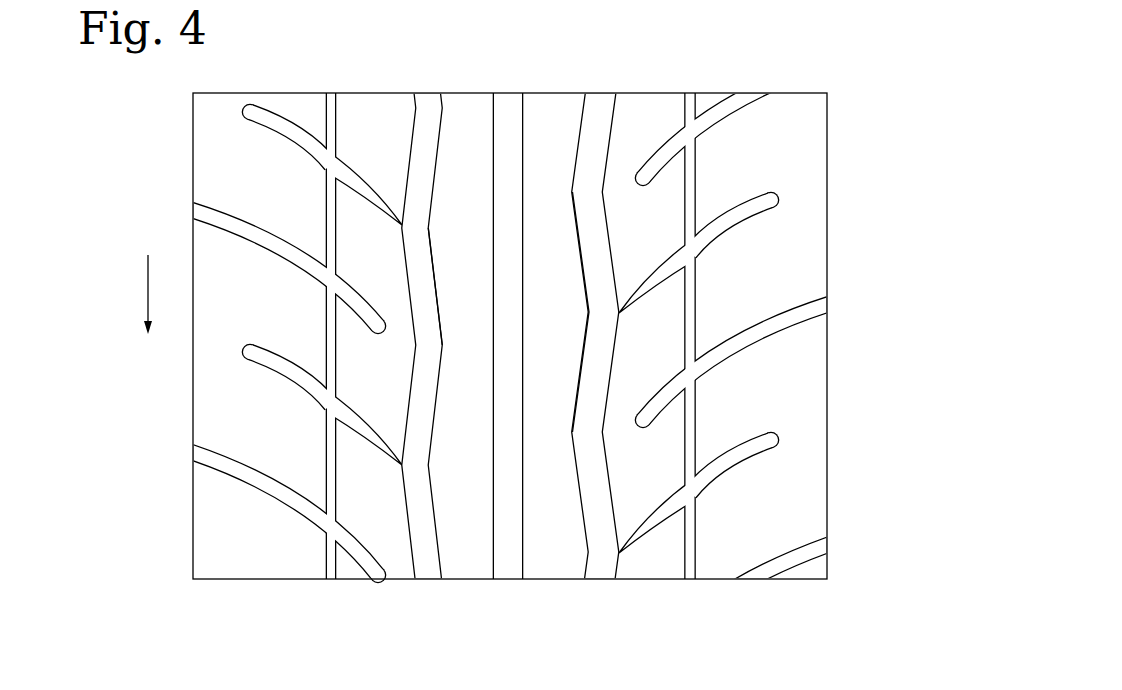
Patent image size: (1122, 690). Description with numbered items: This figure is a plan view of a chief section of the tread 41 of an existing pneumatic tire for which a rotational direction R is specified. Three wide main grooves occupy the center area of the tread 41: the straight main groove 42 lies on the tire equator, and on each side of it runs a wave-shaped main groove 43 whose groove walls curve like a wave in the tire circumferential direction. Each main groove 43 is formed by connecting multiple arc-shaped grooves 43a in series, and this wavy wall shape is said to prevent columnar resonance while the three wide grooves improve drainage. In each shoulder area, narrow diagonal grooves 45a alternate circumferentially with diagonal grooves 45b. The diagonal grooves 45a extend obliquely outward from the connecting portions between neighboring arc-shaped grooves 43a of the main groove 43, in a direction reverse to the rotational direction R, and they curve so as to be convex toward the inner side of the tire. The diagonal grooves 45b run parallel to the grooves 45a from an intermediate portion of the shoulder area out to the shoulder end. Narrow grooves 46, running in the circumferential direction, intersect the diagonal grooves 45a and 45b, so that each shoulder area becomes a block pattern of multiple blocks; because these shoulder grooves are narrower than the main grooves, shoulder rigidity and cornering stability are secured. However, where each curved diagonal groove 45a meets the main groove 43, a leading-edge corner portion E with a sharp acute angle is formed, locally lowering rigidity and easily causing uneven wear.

The tread 41 is at (828, 143).
The straight main groove 42 is at (511, 579).
The wave-shaped main groove 43 is at (432, 580).
The arc-shaped groove 43a is at (438, 326).
The diagonal groove 45a is at (246, 356).
The diagonal groove 45b is at (216, 462).
The narrow groove 46 is at (331, 580).
The leading-edge corner portion E is at (400, 221).
The rotational direction R is at (147, 313).